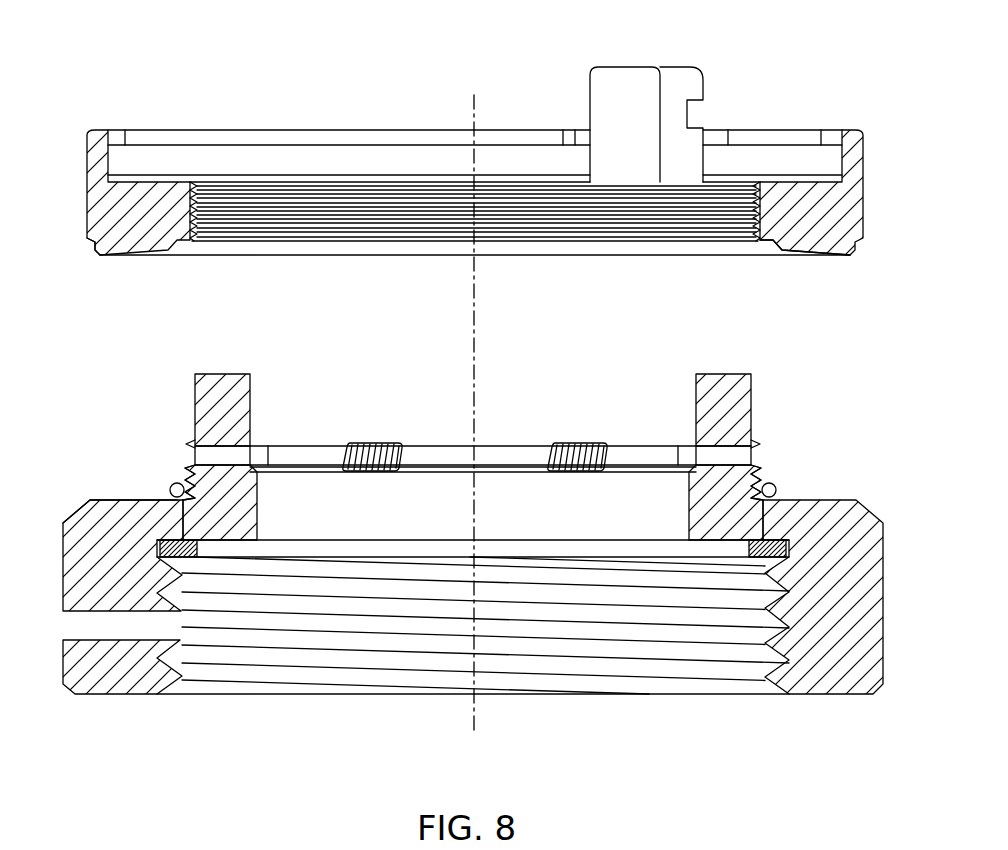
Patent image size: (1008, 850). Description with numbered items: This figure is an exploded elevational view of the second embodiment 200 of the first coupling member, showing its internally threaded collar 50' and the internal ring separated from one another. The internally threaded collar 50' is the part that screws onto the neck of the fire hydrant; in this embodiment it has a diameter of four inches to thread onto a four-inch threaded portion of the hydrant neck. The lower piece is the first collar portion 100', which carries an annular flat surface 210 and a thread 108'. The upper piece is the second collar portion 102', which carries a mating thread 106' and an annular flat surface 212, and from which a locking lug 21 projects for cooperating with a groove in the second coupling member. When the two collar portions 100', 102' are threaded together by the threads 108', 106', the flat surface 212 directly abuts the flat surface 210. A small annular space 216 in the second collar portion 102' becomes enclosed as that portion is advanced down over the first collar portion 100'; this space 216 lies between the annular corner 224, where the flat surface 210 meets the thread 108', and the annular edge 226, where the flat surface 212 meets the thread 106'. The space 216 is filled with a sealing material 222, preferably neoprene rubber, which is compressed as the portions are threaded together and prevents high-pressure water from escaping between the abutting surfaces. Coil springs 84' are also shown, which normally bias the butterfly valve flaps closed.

The second embodiment of the first coupling member 200 is at (301, 98).
The locking lug 21 is at (645, 68).
The thread 106' is at (475, 196).
The second collar portion 102' is at (97, 275).
The annular flat surface 212 is at (140, 257).
The annular edge 226 is at (773, 244).
The thread 108' is at (473, 457).
The coil spring 84' is at (478, 427).
The annular flat surface 210 is at (102, 500).
The sealing material 222 is at (170, 493).
The annular space 216 is at (193, 488).
The annular corner 224 is at (763, 488).
The first collar portion 100' is at (470, 590).
The internally threaded collar 50' is at (485, 649).